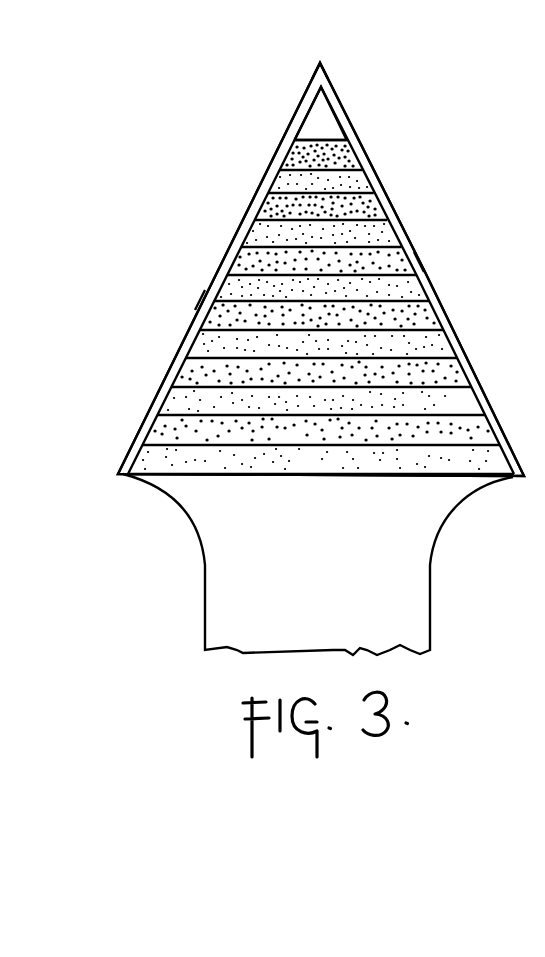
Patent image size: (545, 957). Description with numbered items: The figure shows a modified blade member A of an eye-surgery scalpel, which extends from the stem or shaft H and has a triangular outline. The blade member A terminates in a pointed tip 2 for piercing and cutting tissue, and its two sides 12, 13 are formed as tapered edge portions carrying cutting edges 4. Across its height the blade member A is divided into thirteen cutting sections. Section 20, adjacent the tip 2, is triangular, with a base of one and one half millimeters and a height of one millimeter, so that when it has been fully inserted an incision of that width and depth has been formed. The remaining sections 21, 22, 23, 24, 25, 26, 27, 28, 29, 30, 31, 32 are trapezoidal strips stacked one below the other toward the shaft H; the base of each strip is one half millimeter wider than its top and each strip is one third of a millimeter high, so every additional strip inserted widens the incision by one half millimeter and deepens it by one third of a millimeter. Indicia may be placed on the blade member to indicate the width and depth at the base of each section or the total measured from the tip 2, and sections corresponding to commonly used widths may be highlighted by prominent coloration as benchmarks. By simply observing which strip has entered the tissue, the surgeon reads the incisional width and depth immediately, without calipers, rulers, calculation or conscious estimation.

The pointed tip 2 is at (332, 39).
The cutting edges 4 is at (357, 123).
The side of the blade member 12 is at (194, 296).
The side of the blade member 13 is at (436, 260).
The triangular cutting section 20 is at (310, 106).
The cutting section 21 is at (289, 145).
The cutting section 22 is at (350, 180).
The cutting section 23 is at (365, 213).
The cutting section 24 is at (368, 233).
The cutting section 25 is at (246, 252).
The cutting section 26 is at (395, 292).
The cutting section 27 is at (412, 315).
The cutting section 28 is at (223, 340).
The cutting section 29 is at (442, 380).
The cutting section 30 is at (197, 402).
The cutting section 31 is at (462, 437).
The cutting section 32 is at (160, 458).
The blade member A is at (212, 191).
The stem or shaft H is at (388, 584).